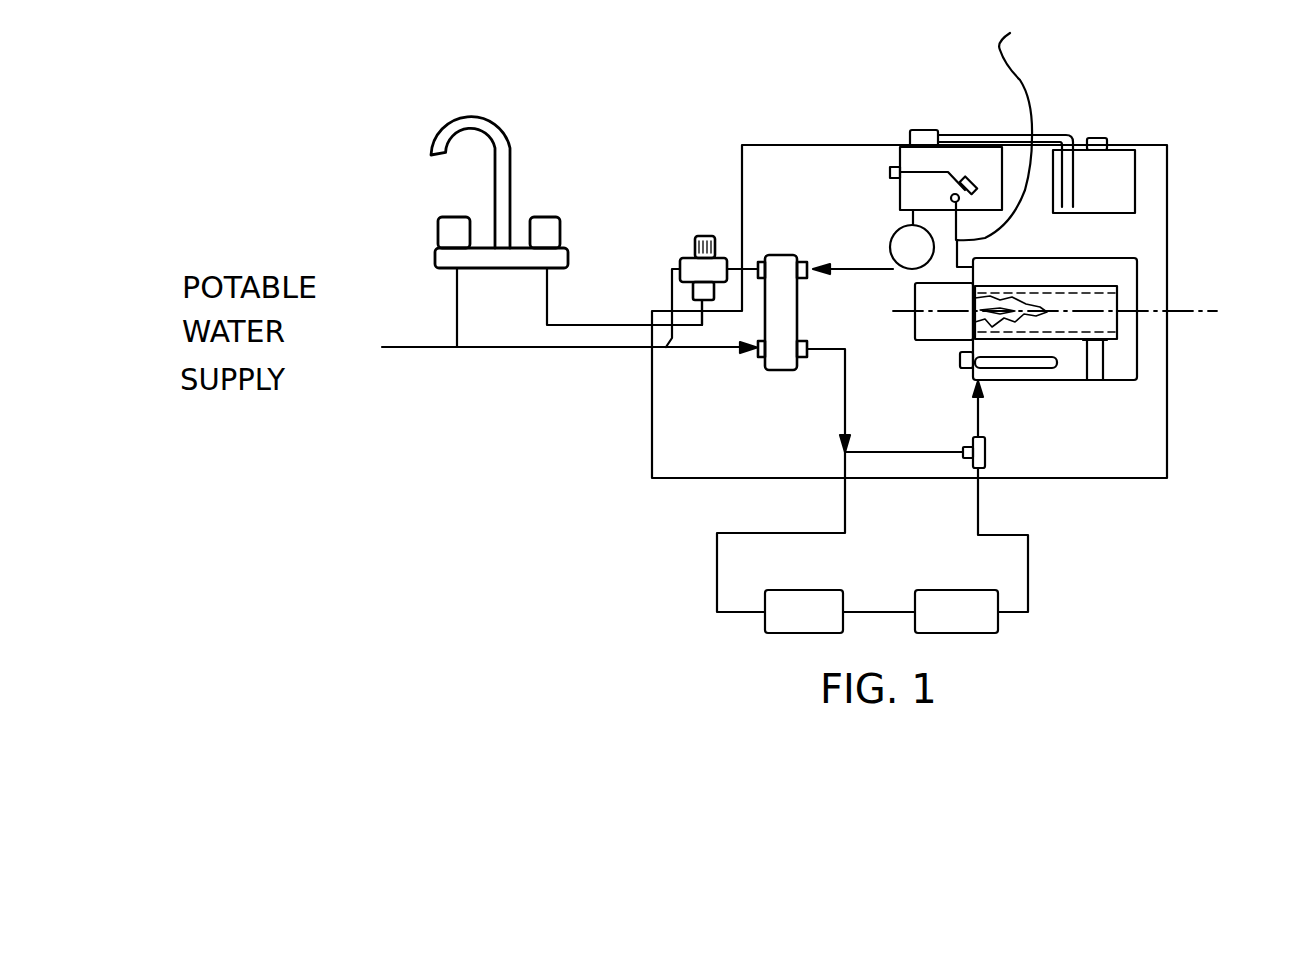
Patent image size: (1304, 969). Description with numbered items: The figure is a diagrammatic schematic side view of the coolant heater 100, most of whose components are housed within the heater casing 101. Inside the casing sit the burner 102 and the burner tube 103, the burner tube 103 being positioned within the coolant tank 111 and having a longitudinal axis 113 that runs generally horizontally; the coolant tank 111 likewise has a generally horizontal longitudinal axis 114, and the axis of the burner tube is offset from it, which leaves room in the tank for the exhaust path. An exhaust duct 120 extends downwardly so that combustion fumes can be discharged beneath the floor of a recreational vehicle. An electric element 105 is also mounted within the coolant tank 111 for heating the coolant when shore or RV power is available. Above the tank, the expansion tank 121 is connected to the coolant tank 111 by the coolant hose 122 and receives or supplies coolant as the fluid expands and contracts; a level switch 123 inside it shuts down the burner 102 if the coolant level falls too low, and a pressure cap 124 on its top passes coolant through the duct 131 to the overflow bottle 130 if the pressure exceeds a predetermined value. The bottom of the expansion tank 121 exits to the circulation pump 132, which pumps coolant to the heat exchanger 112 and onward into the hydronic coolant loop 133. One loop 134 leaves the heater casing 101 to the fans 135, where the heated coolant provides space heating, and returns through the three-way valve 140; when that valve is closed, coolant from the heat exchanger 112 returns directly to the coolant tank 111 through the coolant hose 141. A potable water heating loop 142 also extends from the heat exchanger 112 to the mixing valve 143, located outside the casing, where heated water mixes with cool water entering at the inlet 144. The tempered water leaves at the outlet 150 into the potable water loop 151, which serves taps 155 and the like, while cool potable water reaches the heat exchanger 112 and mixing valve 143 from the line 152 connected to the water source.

The coolant heater 100 is at (545, 545).
The heater casing 101 is at (1167, 440).
The burner 102 is at (932, 342).
The burner tube 103 is at (1080, 287).
The electric element 105 is at (1027, 370).
The coolant tank 111 is at (1073, 381).
The heat exchanger 112 is at (800, 302).
The longitudinal axis of the burner tube 113 is at (1197, 313).
The longitudinal axis of the coolant tank 114 is at (1178, 312).
The exhaust duct 120 is at (1107, 358).
The expansion tank 121 is at (900, 164).
The coolant hose 122 is at (1047, 145).
The level switch 123 is at (980, 180).
The pressure cap 124 is at (927, 130).
The overflow bottle 130 is at (1135, 178).
The duct 131 is at (1018, 140).
The circulation pump 132 is at (891, 236).
The hydronic coolant loop 133 is at (843, 410).
The loop 134 is at (845, 503).
The fans 135 is at (793, 590).
The three-way valve 140 is at (988, 449).
The coolant hose 141 is at (880, 452).
The potable water heating loop 142 is at (738, 265).
The mixing valve 143 is at (683, 258).
The inlet 144 is at (673, 266).
The outlet 150 is at (707, 302).
The potable water loop 151 is at (592, 325).
The line 152 is at (565, 350).
The taps 155 is at (512, 168).